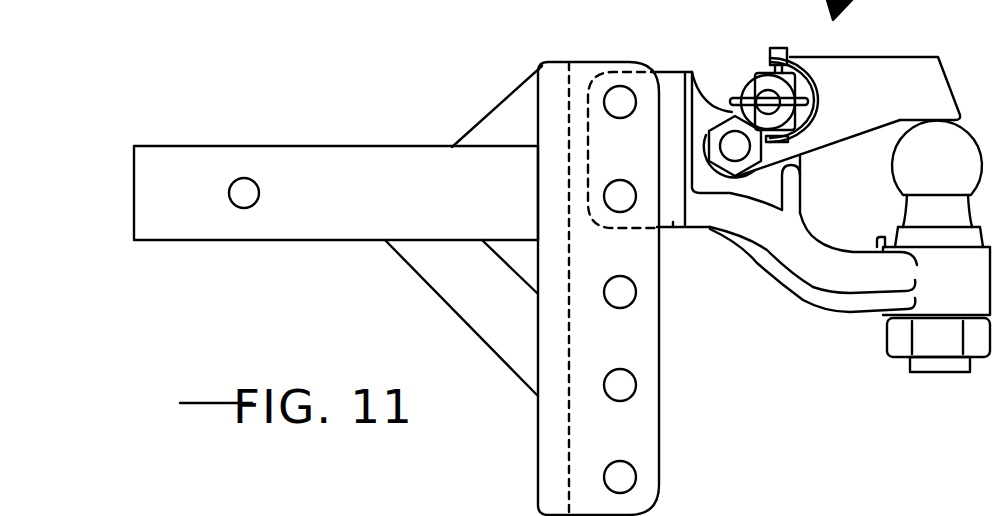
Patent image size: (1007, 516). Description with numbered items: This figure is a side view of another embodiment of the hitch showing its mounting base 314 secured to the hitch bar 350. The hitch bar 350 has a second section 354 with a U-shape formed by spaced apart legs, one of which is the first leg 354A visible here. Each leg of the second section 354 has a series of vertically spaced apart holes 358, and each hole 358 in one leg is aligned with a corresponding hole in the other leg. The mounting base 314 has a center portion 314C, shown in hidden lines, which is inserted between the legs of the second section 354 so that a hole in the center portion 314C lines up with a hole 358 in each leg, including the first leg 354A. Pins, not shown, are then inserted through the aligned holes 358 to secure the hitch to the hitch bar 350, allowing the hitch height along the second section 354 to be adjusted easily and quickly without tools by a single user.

The hitch bar 350 is at (307, 152).
The second section 354 is at (562, 77).
The first leg 354A is at (556, 453).
The holes 358 is at (625, 385).
The mounting base 314 is at (685, 225).
The center portion 314C is at (620, 73).